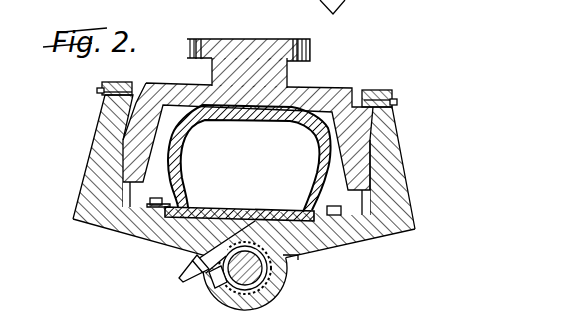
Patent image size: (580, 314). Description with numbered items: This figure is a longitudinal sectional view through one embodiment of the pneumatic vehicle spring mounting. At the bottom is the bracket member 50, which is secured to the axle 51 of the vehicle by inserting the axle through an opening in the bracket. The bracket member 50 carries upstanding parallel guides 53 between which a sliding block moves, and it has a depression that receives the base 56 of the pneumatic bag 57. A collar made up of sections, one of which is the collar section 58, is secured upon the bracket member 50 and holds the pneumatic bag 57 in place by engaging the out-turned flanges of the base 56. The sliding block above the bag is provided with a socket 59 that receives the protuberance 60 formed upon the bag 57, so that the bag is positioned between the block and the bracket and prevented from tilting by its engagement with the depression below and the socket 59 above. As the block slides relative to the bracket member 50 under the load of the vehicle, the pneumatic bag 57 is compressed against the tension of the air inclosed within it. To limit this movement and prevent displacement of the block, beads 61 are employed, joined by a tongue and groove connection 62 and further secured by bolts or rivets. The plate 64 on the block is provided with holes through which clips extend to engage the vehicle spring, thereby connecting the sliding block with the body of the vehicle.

The bracket member 50 is at (402, 150).
The axle 51 is at (262, 268).
The upstanding parallel guides 53 is at (125, 197).
The base 56 is at (337, 244).
The pneumatic bag 57 is at (250, 166).
The collar section 58 is at (188, 192).
The socket 59 is at (257, 97).
The protuberance 60 is at (219, 97).
The beads 61 is at (133, 88).
The tongue and groove connection 62 is at (101, 92).
The plate 64 is at (251, 44).